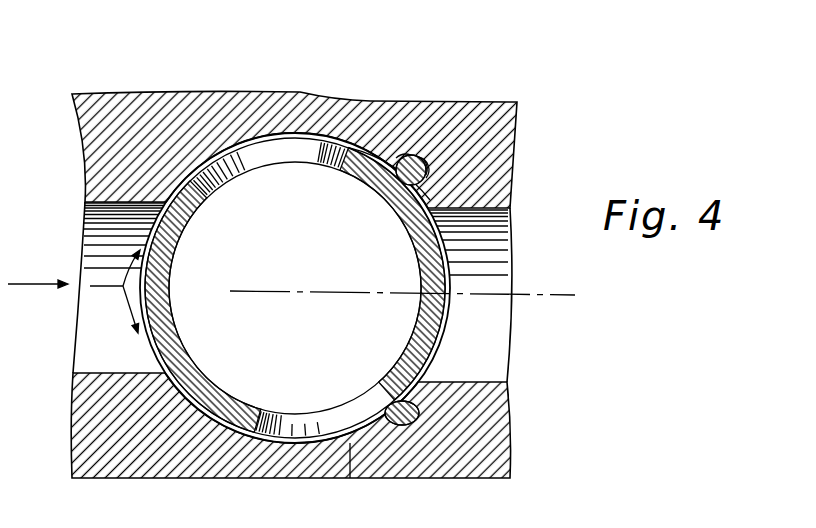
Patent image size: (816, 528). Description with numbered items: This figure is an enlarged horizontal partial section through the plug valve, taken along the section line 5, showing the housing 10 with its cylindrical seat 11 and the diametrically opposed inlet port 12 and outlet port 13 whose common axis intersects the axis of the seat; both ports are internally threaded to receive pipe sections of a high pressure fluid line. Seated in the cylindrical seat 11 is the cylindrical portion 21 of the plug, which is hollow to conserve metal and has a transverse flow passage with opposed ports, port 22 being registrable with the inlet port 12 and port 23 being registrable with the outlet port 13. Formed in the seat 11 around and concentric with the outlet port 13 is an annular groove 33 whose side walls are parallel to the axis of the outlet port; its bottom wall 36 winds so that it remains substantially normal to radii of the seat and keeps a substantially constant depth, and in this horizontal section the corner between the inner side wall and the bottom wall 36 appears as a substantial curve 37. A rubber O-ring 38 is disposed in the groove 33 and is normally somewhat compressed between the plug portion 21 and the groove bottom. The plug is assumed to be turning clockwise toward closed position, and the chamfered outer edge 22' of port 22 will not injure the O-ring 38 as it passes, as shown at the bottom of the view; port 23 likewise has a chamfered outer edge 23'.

The section line 5- 5 is at (250, 296).
The housing 10 is at (519, 428).
The cylindrical seat 11 is at (350, 479).
The inlet port 12 is at (87, 253).
The outlet port 13 is at (502, 262).
The cylindrical portion 21 is at (433, 330).
The port 22 is at (322, 402).
The chamfered outer edge 22' is at (282, 401).
The port 23 is at (239, 179).
The chamfered outer edge 23' is at (320, 174).
The annular groove 33 is at (390, 158).
The bottom wall 36 is at (427, 163).
The curve 37 is at (412, 196).
The rubber O-ring 38 is at (414, 165).